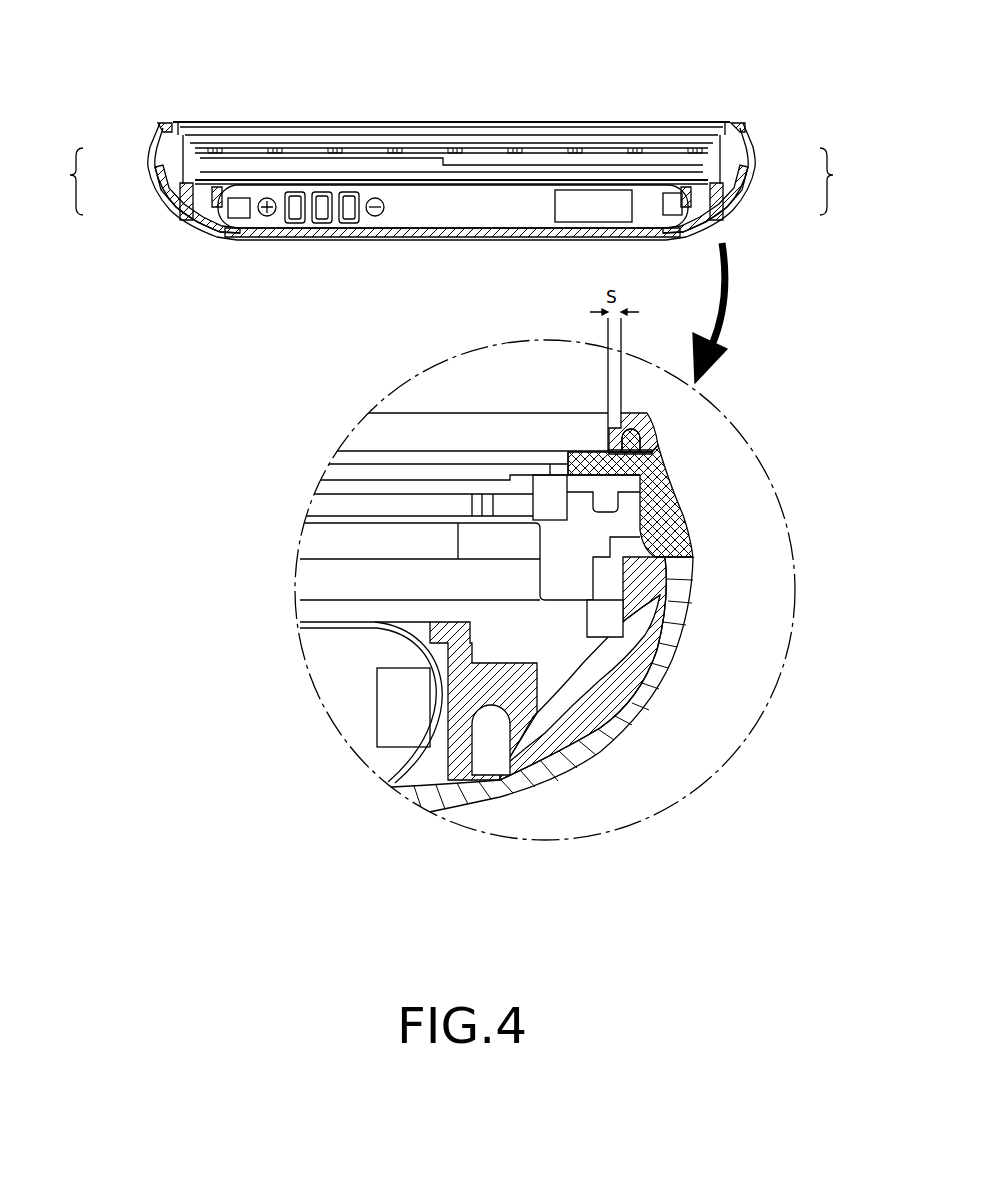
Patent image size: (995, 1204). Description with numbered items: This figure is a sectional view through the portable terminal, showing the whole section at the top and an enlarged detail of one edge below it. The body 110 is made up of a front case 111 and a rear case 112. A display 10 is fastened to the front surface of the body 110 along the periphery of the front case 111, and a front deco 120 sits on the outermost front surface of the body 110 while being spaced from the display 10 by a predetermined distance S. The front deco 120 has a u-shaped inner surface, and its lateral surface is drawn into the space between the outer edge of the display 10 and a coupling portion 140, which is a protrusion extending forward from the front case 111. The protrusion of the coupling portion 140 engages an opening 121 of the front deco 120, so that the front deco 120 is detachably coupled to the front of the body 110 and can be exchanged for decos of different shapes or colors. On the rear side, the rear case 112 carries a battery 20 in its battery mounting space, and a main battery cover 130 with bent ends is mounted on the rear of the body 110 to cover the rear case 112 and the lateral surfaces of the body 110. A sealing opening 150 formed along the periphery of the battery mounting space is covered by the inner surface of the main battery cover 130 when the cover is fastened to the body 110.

The display 10 is at (275, 122).
The battery 20 is at (418, 213).
The body 110 is at (451, 181).
The front case 111 is at (150, 152).
The rear case 112 is at (158, 203).
The front deco 120 is at (163, 120).
The opening 121 is at (655, 427).
The main battery cover 130 is at (260, 240).
The coupling portion 140 is at (650, 453).
The sealing opening 150 is at (492, 753).